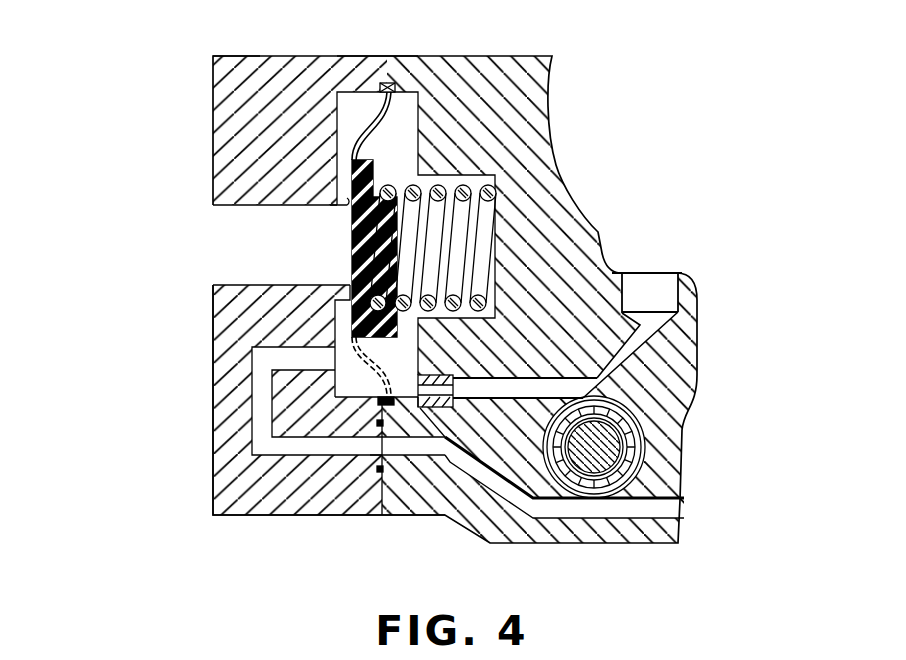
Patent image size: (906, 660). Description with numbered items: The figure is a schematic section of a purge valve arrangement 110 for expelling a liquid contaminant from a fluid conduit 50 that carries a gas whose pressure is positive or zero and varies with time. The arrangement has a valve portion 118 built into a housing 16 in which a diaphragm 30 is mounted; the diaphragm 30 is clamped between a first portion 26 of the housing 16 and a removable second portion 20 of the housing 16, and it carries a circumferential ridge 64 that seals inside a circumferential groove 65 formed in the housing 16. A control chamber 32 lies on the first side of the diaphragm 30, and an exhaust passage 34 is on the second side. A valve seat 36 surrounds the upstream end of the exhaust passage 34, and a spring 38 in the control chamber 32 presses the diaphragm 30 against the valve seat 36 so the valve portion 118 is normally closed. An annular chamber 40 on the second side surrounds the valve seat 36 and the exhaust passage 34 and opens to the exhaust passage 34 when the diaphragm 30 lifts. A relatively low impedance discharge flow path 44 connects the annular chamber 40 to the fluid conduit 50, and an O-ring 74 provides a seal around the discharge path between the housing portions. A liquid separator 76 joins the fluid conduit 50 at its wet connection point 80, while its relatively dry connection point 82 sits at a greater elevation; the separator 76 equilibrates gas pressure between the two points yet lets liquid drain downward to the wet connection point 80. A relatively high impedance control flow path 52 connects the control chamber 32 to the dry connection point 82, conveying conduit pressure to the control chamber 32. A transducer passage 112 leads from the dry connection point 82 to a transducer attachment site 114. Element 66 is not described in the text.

The purge valve arrangement 110 is at (181, 94).
The second portion of the housing 20 is at (367, 58).
The circumferential ridge 64 is at (393, 86).
The housing 16 is at (482, 65).
The valve seat 36 is at (340, 205).
The exhaust passage 34 is at (228, 215).
The spring 38 is at (496, 216).
The valve portion 118 is at (258, 310).
The diaphragm 30 is at (348, 365).
The annular chamber 40 is at (348, 372).
The control chamber 32 is at (412, 365).
The relatively high impedance control flow path 52 is at (507, 386).
The transducer attachment site 114 is at (660, 296).
The transducer passage 112 is at (643, 340).
The relatively dry connection point 82 is at (596, 398).
The liquid separator 76 is at (658, 434).
The first portion of the housing 26 is at (662, 458).
The fluid conduit 50 is at (662, 508).
The wet connection point 80 is at (592, 502).
The relatively low impedance discharge flow path 44 is at (466, 464).
The O-ring 74 is at (378, 464).
The circumferential groove 65 is at (383, 410).
The stop 66 is at (430, 407).